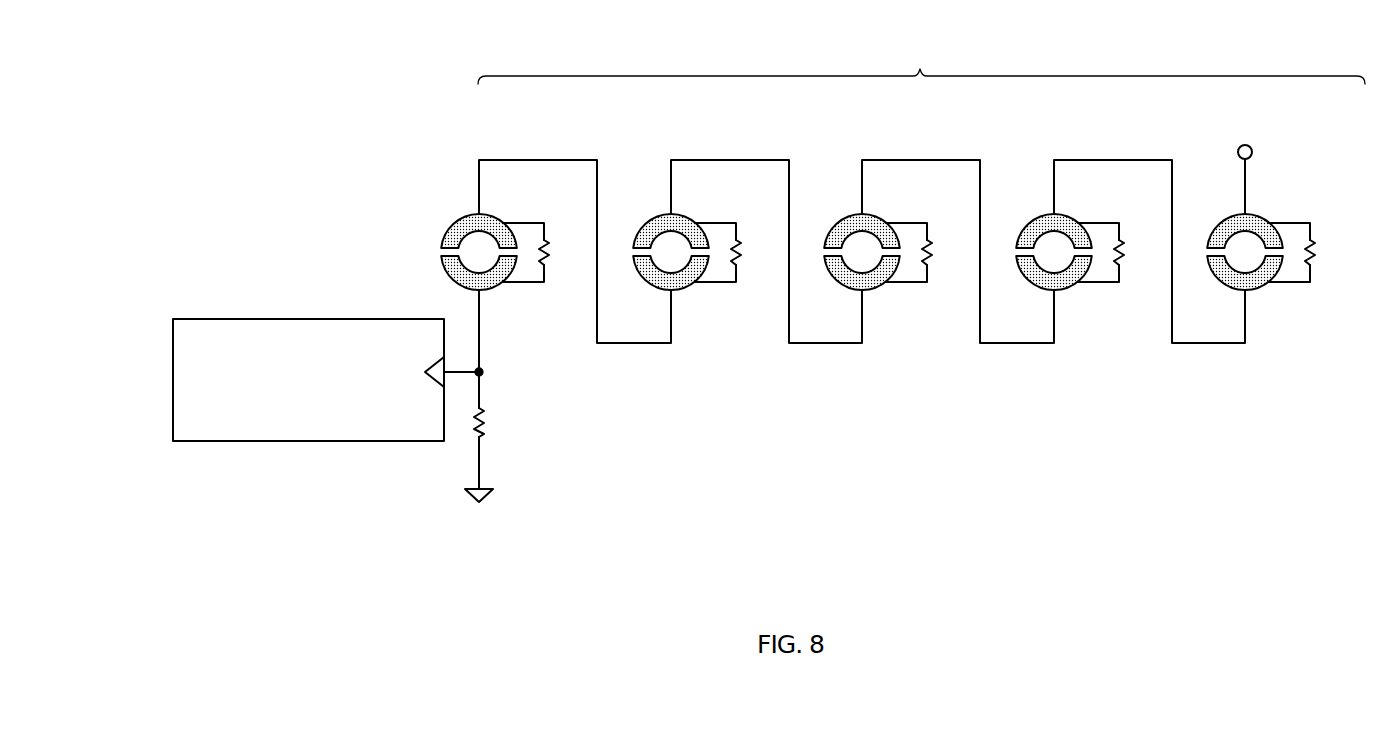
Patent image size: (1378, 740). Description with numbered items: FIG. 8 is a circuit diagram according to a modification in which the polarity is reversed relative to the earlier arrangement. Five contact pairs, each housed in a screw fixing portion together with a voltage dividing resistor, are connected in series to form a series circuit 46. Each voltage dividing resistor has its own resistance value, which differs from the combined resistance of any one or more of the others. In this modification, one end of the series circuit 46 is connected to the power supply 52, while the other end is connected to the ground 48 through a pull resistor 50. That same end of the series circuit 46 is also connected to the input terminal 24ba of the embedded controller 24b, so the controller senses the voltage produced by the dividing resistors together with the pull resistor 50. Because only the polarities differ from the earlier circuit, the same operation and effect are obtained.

The series circuit 46 is at (921, 60).
The power supply 52 is at (1238, 152).
The embedded controller 24b is at (312, 318).
The input terminal 24ba is at (432, 386).
The pull resistor 50 is at (487, 430).
The ground 48 is at (488, 498).